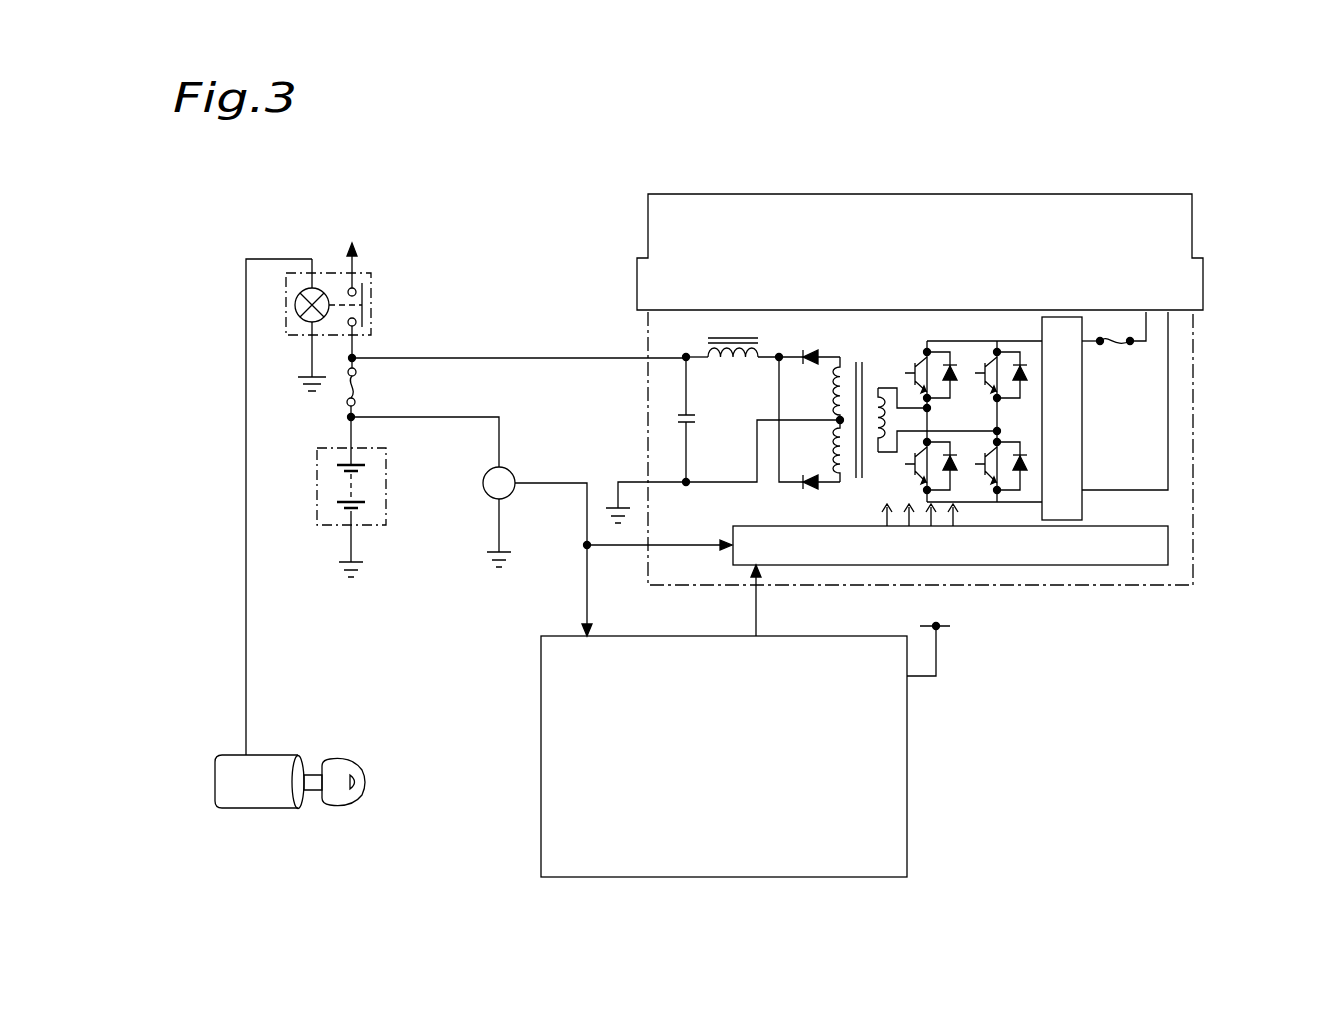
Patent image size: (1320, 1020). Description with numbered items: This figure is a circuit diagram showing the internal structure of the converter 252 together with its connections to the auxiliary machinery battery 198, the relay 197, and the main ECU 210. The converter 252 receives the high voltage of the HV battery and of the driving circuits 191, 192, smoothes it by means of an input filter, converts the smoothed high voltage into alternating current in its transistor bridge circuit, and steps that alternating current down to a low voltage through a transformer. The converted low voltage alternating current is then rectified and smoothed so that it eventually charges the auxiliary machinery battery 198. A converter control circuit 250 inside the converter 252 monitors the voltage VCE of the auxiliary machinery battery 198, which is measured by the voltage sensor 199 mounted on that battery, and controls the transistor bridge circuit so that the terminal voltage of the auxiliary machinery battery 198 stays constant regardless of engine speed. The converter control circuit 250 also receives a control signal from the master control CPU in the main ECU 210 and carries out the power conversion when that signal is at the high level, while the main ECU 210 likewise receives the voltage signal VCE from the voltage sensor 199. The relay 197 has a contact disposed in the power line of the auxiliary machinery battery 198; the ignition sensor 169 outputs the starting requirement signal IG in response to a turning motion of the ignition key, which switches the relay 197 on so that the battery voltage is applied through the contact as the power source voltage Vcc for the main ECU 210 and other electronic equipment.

The ignition sensor 169 is at (272, 755).
The driving circuit 191 is at (920, 226).
The driving circuit 192 is at (1003, 194).
The relay 197 is at (328, 272).
The auxiliary machinery battery 198 is at (386, 493).
The voltage sensor 199 is at (513, 472).
The main ECU 210 is at (541, 658).
The converter control circuit 250 is at (1012, 565).
The converter 252 is at (1195, 350).